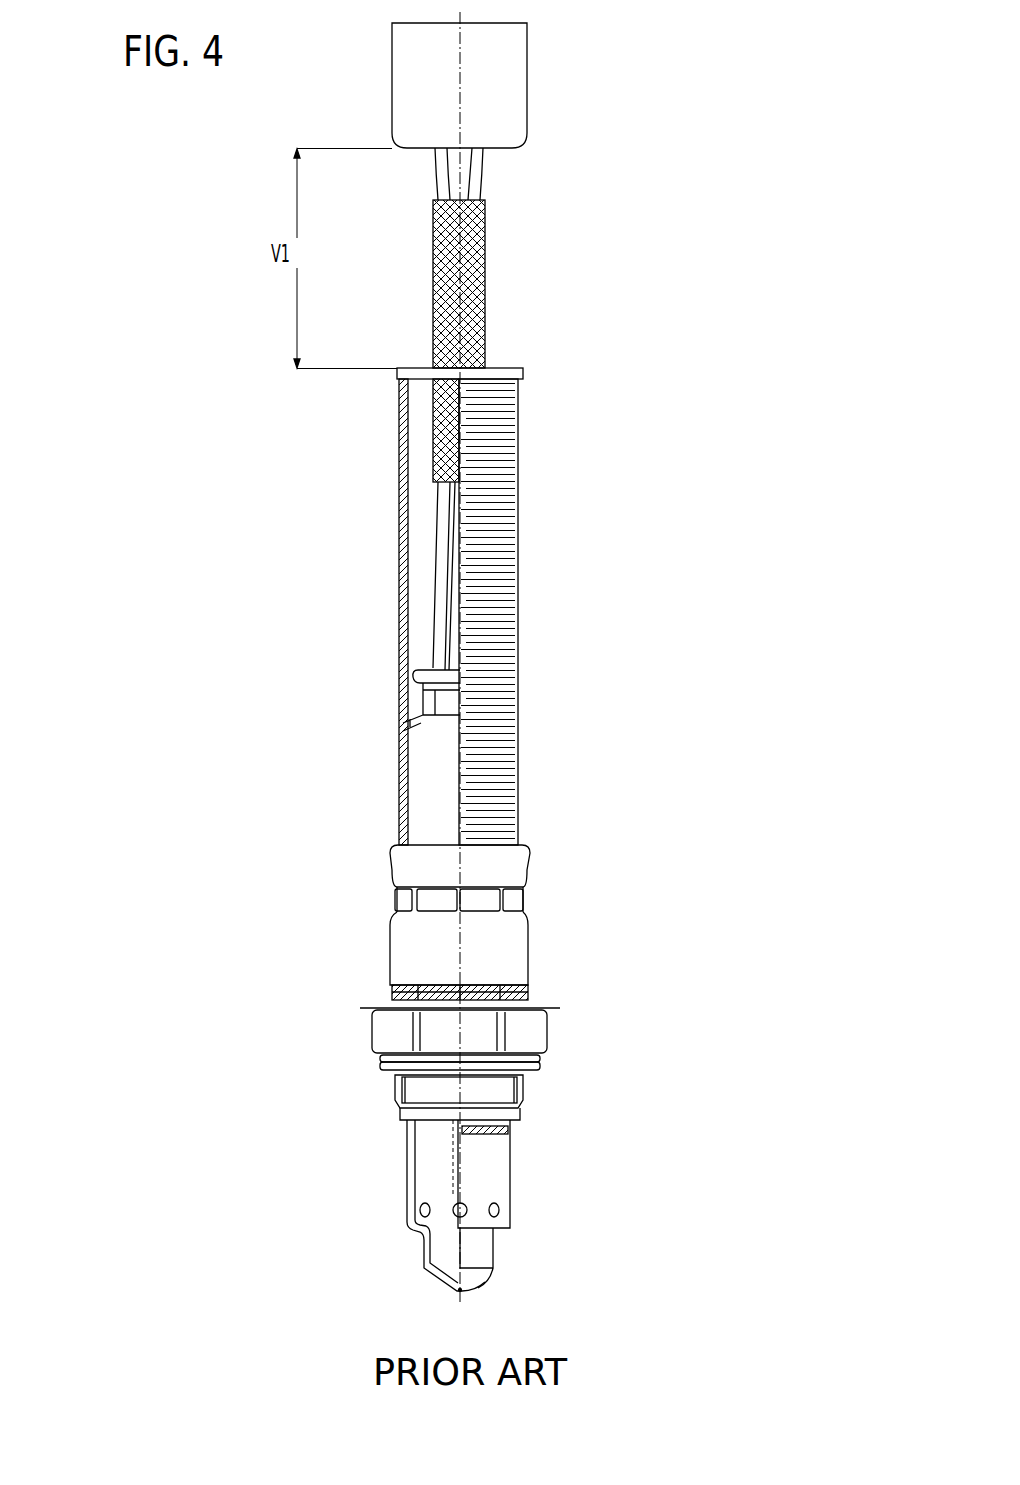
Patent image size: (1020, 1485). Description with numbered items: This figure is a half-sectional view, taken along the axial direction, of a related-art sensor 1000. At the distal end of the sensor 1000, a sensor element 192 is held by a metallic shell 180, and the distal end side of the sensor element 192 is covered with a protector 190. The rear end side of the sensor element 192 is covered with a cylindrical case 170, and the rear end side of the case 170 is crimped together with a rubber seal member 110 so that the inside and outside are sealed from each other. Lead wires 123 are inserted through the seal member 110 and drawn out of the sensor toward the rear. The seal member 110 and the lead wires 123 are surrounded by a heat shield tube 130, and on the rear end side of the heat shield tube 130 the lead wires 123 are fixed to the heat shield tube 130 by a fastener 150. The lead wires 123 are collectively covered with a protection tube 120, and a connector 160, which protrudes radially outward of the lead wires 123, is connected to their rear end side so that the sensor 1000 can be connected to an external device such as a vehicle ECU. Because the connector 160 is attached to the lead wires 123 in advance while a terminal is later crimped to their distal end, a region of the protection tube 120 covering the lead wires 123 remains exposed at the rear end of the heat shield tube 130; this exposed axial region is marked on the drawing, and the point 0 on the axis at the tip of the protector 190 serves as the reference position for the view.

The sensor 1000 is at (655, 232).
The connector 160 is at (512, 96).
The protection tube 120 is at (487, 244).
The fastener 150 is at (488, 366).
The heat shield tube 130 is at (510, 572).
The lead wires 123 is at (432, 656).
The seal member 110 is at (418, 681).
The case 170 is at (527, 930).
The metallic shell 180 is at (537, 1032).
The protector 190 is at (505, 1184).
The sensor element 192 is at (452, 1168).
The origin point 0 is at (462, 1290).